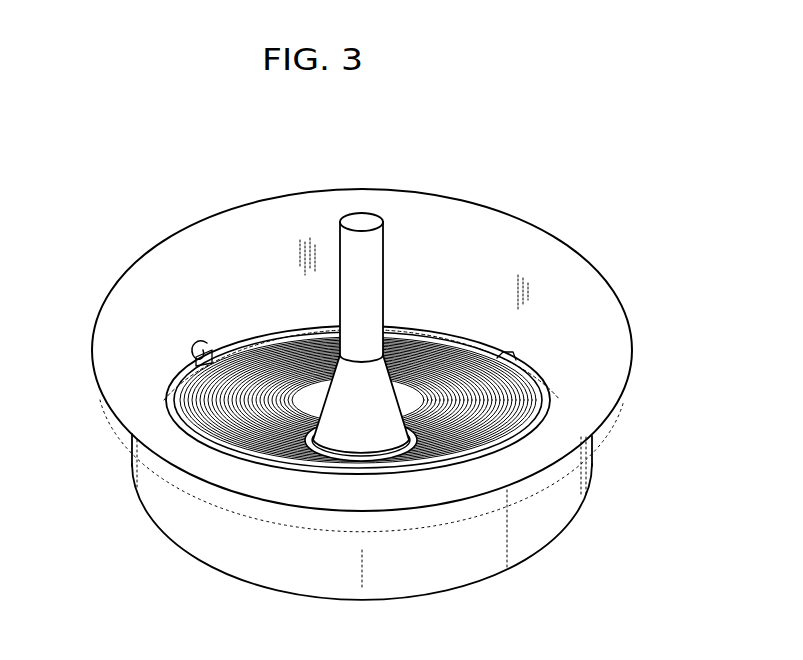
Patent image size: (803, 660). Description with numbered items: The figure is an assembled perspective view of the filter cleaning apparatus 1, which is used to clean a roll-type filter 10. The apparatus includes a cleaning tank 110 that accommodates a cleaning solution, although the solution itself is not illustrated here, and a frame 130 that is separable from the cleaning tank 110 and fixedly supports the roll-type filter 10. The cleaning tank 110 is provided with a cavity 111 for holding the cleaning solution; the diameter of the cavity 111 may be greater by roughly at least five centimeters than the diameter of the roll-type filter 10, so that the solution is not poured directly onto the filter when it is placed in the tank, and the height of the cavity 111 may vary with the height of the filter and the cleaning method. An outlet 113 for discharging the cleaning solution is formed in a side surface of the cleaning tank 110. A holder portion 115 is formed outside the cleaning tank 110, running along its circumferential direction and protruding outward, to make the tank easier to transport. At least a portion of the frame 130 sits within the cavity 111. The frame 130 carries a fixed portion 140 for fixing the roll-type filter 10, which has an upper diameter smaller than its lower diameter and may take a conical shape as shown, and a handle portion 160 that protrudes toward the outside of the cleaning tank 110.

The filter cleaning apparatus 1 is at (597, 140).
The roll-type filter 10 is at (456, 354).
The cleaning tank 110 is at (611, 462).
The cavity 111 is at (440, 287).
The outlet 113 is at (204, 357).
The holder portion 115 is at (98, 350).
The frame 130 is at (549, 388).
The fixed portion 140 is at (340, 388).
The handle portion 160 is at (367, 258).